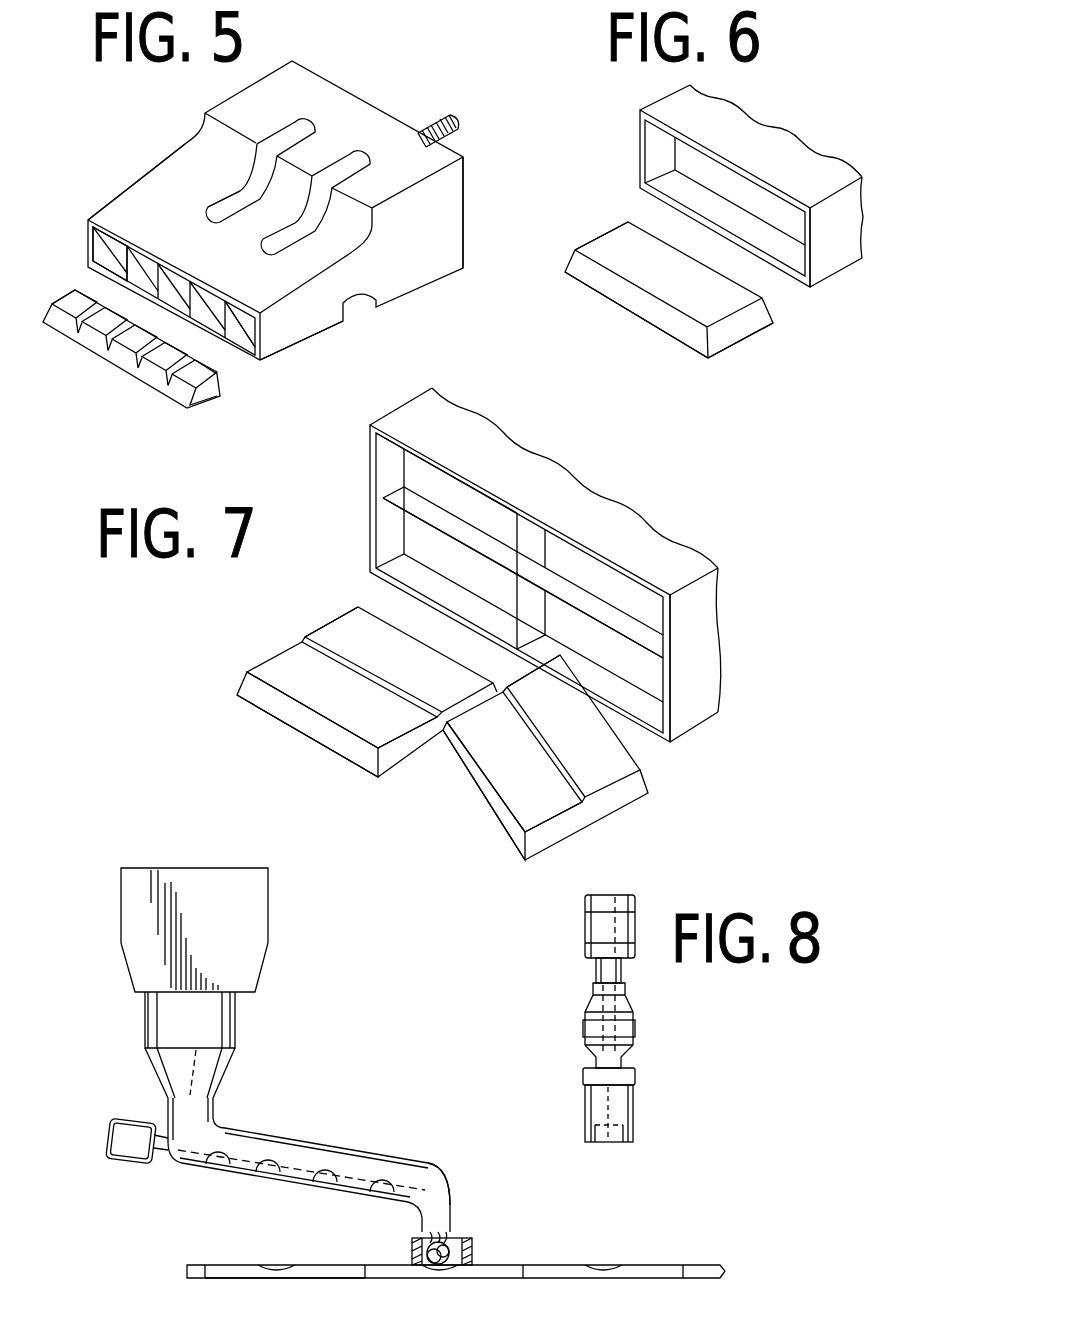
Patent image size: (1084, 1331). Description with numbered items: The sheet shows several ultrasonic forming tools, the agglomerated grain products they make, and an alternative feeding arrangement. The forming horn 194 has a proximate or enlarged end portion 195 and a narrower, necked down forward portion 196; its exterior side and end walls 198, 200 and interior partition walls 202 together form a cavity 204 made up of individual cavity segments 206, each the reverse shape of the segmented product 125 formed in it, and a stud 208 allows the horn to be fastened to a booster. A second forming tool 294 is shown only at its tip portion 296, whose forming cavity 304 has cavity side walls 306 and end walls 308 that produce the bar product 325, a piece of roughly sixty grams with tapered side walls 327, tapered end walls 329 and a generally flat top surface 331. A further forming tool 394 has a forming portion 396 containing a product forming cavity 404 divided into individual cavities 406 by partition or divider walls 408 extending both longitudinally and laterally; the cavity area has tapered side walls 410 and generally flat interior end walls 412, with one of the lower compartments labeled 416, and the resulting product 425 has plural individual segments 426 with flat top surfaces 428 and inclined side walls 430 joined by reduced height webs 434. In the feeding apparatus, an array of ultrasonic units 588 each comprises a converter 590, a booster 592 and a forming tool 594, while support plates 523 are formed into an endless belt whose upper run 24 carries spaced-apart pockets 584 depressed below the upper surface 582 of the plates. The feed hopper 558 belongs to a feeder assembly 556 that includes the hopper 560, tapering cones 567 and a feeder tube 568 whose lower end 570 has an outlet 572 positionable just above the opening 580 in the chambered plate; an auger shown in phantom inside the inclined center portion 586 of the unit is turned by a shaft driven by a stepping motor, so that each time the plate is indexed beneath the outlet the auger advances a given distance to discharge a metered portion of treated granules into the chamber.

In FIG. 5, the forming horn 194 is at (330, 80).
In FIG. 5, the proximate or enlarged end portion 195 is at (450, 170).
In FIG. 5, the necked down forward portion 196 is at (133, 220).
In FIG. 5, the exterior side walls 198 is at (232, 260).
In FIG. 5, the exterior end walls 200 is at (303, 318).
In FIG. 5, the interior partition walls 202 is at (236, 320).
In FIG. 5, the cavity 204 is at (152, 306).
In FIG. 5, the individual cavity segments 206 is at (93, 234).
In FIG. 5, the stud 208 is at (432, 118).
In FIG. 5, the product 125 is at (182, 420).
In FIG. 6, the forming tool 294 is at (822, 133).
In FIG. 6, the tip portion 296 is at (815, 183).
In FIG. 6, the forming cavity 304 is at (794, 250).
In FIG. 6, the cavity side walls 306 is at (688, 197).
In FIG. 6, the cavity end walls 308 is at (660, 150).
In FIG. 6, the product 325 is at (743, 350).
In FIG. 6, the tapered side walls 327 is at (648, 310).
In FIG. 6, the tapered end walls 329 is at (747, 325).
In FIG. 6, the top surface 331 is at (607, 245).
In FIG. 7, the forming tool 394 is at (706, 530).
In FIG. 7, the proximate or forming portion 396 is at (698, 628).
In FIG. 7, the product forming cavity 404 is at (620, 597).
In FIG. 7, the individual cavities 406 is at (434, 479).
In FIG. 7, the partition or divider walls 408 is at (477, 545).
In FIG. 7, the side walls 410 is at (392, 518).
In FIG. 7, the interior end walls 412 is at (645, 735).
In FIG. 7, the lower compartment 416 is at (434, 542).
In FIG. 7, the product 425 is at (489, 749).
In FIG. 7, the individual segments 426 is at (343, 643).
In FIG. 7, the flat top surfaces 428 is at (338, 693).
In FIG. 7, the inclined side walls 430 is at (493, 833).
In FIG. 7, the reduced height webs 434 is at (380, 777).
In FIG. 8, the feeder assembly 556 is at (179, 1045).
In FIG. 8, the feed hopper 558 is at (190, 930).
In FIG. 8, the hopper 560 is at (240, 958).
In FIG. 8, the tapering cones 567 is at (212, 1073).
In FIG. 8, the feeder tube 568 is at (348, 1157).
In FIG. 8, the lower end 570 is at (443, 1208).
In FIG. 8, the outlet 572 is at (452, 1228).
In FIG. 8, the opening 580 is at (430, 1241).
In FIG. 8, the upper surface 582 is at (412, 1250).
In FIG. 8, the pockets 584 is at (268, 1160).
In FIG. 8, the inclined center portion 586 is at (165, 1163).
In FIG. 8, the ultrasonic units 588 is at (613, 1018).
In FIG. 8, the converter 590 is at (580, 923).
In FIG. 8, the booster 592 is at (588, 998).
In FIG. 8, the forming tool 594 is at (582, 1107).
In FIG. 8, the upper run 24 is at (456, 1255).
In FIG. 8, the support plates 523 is at (325, 1270).